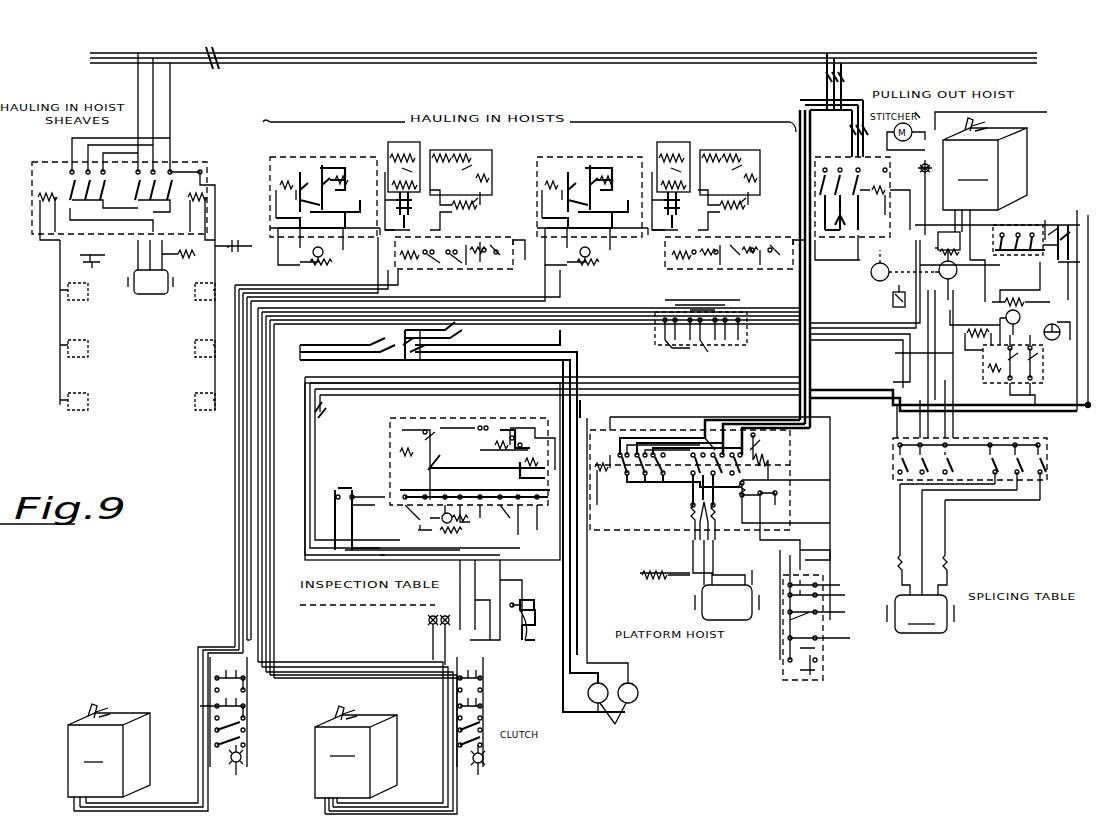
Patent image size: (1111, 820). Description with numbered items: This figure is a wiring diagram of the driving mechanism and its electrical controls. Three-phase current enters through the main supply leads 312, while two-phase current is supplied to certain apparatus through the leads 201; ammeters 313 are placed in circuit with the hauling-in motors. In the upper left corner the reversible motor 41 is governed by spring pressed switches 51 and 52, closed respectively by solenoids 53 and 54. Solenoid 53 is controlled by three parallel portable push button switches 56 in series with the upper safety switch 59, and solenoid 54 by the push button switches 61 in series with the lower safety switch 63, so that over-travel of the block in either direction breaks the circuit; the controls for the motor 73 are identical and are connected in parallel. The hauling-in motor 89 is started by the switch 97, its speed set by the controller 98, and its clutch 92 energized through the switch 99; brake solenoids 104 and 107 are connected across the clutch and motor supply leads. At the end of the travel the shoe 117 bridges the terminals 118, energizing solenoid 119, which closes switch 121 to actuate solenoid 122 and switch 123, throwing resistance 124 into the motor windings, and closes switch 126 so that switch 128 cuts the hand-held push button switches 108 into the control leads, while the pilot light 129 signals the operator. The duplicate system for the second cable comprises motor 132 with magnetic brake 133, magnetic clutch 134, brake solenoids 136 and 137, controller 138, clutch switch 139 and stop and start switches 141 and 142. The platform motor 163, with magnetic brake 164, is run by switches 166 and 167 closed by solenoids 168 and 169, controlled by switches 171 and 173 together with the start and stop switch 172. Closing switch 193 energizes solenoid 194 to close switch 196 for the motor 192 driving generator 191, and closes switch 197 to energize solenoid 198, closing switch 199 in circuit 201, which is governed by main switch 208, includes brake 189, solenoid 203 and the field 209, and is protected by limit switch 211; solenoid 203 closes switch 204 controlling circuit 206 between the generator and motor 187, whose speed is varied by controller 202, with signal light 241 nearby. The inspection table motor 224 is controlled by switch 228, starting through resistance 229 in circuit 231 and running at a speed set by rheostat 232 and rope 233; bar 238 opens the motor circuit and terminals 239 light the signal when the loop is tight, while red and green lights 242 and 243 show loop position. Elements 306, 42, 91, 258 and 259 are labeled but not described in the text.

The motor 73 is at (72, 61).
The main supply leads 312 is at (935, 52).
The conductors to pulling out hoist 306 is at (1015, 115).
The spring pressed switch 51 is at (75, 178).
The spring pressed switch 52 is at (175, 178).
The solenoid 53 is at (38, 200).
The solenoid 54 is at (205, 199).
The switch 59 is at (90, 256).
The reversible motor 41 is at (150, 288).
The sheaves motor brake 42 is at (188, 270).
The portable push button switches 56 is at (82, 300).
The portable push button switches 61 is at (195, 395).
The safety switch 63 is at (240, 252).
The motor 89 is at (310, 250).
The clutch 92 is at (365, 135).
The solenoid 104 is at (402, 142).
The second solenoid 107 is at (440, 150).
The motor brake 91 is at (478, 208).
The shoe 117 is at (410, 213).
The terminals 118 is at (410, 200).
The solenoid 119 is at (405, 268).
The switch 121 is at (425, 262).
The solenoid 122 is at (288, 187).
The switch 123 is at (305, 176).
The resistance 124 is at (328, 162).
The switch 126 is at (455, 262).
The switch 128 is at (525, 255).
The magnetic clutch 134 is at (635, 135).
The brake solenoid 136 is at (672, 142).
The brake solenoid 137 is at (710, 150).
The magnetic brake 133 is at (746, 208).
The driving motor 132 is at (585, 275).
The push button switches 108 is at (735, 346).
The rope 233 is at (390, 605).
The resistance 229 is at (485, 423).
The motor circuit 231 is at (460, 445).
The bar 238 is at (342, 480).
The terminals 239 is at (335, 498).
The motor 224 is at (445, 530).
The spring operated rheostat 232 is at (498, 582).
The red signal light 242 is at (428, 620).
The green signal light 243 is at (445, 625).
The switch 228 is at (530, 642).
The switch 166 is at (645, 478).
The switch 167 is at (692, 488).
The solenoid 168 is at (611, 482).
The solenoid 169 is at (770, 442).
The reversible motor 163 is at (726, 580).
The magnetic brake 164 is at (642, 578).
The switch 171 is at (818, 590).
The switch 173 is at (818, 615).
The start and stop switch 172 is at (830, 672).
The ammeters 313 is at (613, 709).
The switch 196 is at (860, 172).
The solenoid 194 is at (893, 188).
The smaller switch 197 is at (882, 245).
The motor 192 is at (880, 281).
The switch 193 is at (895, 306).
The generator 191 is at (948, 282).
The magnetic brake 189 is at (970, 325).
The signal light 241 is at (928, 162).
The controller 202 is at (971, 173).
The solenoid 203 is at (998, 370).
The solenoid 198 is at (1000, 230).
The circuit 201 is at (1052, 215).
The main switch 208 is at (1060, 225).
The spring opened switch 199 is at (1045, 255).
The field 209 is at (1030, 302).
The motor 187 is at (1013, 327).
The limit switch 211 is at (1058, 340).
The spring opened switch 204 is at (1043, 365).
The circuit 206 is at (893, 353).
The splicing table contactor 259 is at (950, 475).
The splicing table motor 258 is at (920, 558).
The controller 98 is at (112, 741).
The start switch 97 is at (215, 678).
The switch 99 is at (217, 745).
The pilot light 129 is at (232, 770).
The controller 138 is at (362, 740).
The start switch 142 is at (483, 690).
The stop switch 141 is at (483, 715).
The switch 139 is at (476, 770).